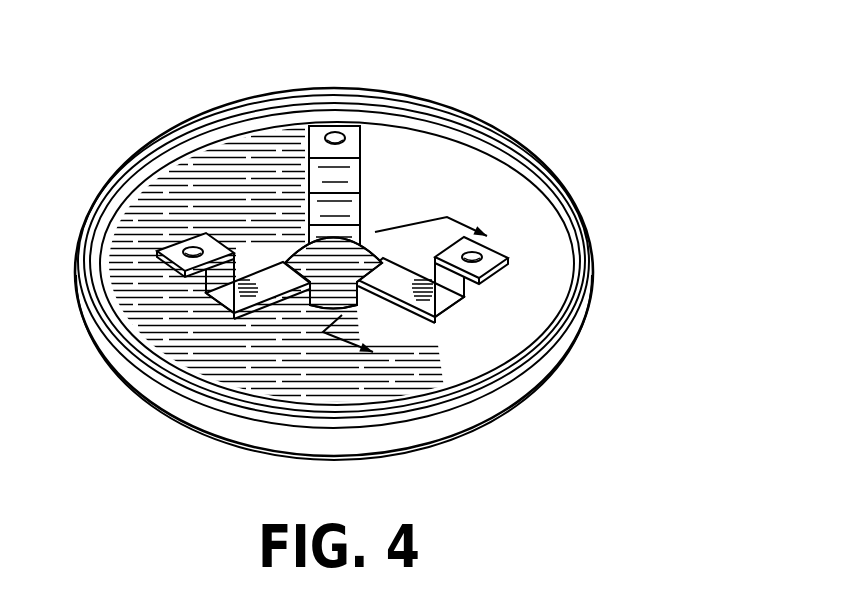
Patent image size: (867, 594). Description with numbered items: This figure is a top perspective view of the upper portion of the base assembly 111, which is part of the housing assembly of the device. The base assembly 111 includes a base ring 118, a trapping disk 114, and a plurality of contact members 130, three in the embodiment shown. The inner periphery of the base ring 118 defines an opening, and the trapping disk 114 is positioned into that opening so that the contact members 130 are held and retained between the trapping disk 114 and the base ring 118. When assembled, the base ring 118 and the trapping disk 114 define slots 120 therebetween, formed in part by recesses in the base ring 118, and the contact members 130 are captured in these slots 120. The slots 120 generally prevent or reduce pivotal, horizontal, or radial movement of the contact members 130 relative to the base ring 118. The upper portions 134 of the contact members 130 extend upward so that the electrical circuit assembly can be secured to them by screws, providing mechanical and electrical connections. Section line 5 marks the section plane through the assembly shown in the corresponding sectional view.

The base assembly 111 is at (605, 215).
The base ring 118 is at (520, 208).
The contact members 130 is at (276, 146).
The upper portions 134 is at (352, 143).
The trapping disk 114 is at (323, 270).
The slots 120 is at (353, 323).
The section line 5- 5 is at (416, 294).